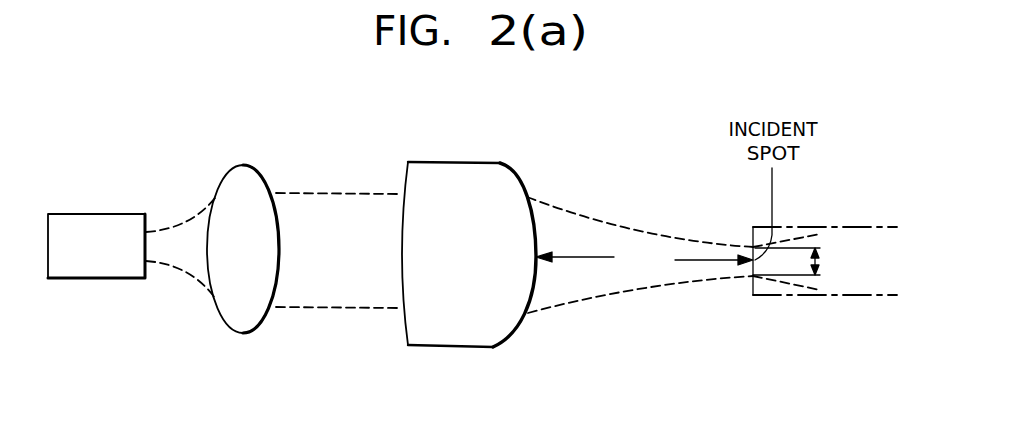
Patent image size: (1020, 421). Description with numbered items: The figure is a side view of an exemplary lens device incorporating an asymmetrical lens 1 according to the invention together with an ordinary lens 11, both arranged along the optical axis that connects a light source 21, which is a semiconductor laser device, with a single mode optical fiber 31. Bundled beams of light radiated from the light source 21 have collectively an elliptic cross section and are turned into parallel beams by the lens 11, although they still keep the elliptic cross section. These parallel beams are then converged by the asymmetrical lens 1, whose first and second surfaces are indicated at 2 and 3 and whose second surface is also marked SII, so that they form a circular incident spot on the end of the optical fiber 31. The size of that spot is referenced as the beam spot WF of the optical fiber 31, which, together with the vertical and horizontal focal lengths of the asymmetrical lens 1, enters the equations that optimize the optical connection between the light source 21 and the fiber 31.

The asymmetrical lens 1 is at (449, 220).
The first (incident) surface of lens 2 is at (410, 260).
The second (exit) surface of lens 3 is at (523, 283).
The ordinary lens 11 is at (245, 165).
The light source 21 is at (92, 223).
The single mode optical fiber 31 is at (855, 292).
The second surface SII is at (644, 262).
The beam spot of the optical fiber WF is at (836, 261).